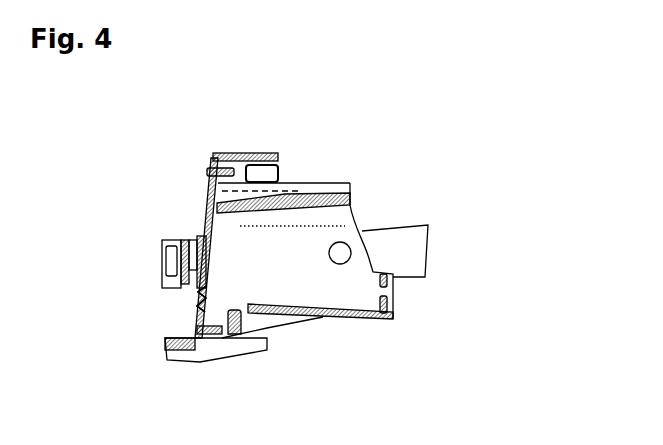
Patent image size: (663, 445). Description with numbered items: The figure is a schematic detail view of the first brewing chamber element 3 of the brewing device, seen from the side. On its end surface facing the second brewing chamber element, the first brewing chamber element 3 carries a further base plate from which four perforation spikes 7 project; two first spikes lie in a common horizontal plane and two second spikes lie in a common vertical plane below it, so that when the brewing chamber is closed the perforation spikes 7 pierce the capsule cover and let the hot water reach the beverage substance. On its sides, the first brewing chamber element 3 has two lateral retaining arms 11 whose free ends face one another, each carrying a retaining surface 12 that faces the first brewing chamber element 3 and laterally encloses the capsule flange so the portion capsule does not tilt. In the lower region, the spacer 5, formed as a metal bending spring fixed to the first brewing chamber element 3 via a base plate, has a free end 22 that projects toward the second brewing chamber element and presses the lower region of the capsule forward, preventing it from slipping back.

The first brewing chamber element 3 is at (302, 222).
The lateral retaining arms 11 is at (164, 258).
The retaining surface 12 is at (188, 238).
The perforation spikes 7 is at (202, 236).
The spacer 5 is at (195, 306).
The free end 22 is at (195, 306).